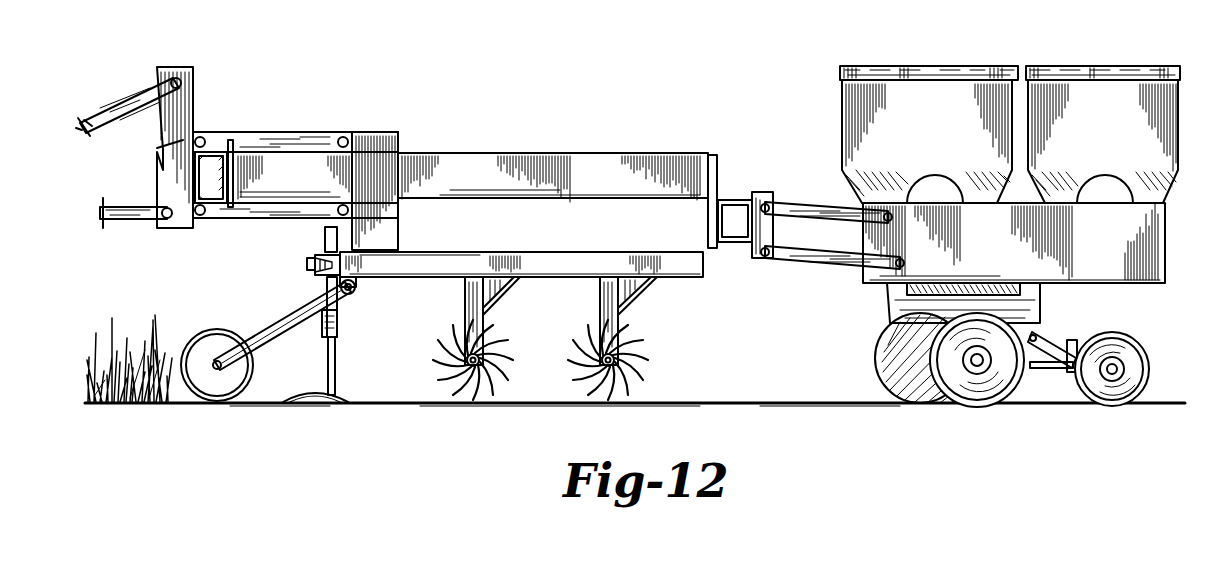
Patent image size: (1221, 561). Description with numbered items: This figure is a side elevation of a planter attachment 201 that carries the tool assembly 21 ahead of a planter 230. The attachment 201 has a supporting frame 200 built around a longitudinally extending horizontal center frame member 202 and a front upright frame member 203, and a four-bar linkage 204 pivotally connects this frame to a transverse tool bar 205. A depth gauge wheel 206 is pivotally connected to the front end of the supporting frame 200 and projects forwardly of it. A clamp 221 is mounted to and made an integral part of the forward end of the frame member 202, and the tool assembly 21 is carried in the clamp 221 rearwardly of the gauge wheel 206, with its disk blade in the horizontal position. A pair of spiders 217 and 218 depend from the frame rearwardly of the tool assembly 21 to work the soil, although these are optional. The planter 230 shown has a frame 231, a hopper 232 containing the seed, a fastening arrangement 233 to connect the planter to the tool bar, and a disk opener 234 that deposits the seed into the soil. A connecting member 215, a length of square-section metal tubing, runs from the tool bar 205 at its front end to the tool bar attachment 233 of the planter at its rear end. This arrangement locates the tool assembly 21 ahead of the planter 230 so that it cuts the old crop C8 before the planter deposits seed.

The supporting frame 200 is at (427, 283).
The attachment 201 is at (320, 117).
The center frame member 202 is at (558, 265).
The front upright frame member 203 is at (385, 160).
The four-bar linkage 204 is at (283, 220).
The tool bar 205 is at (217, 200).
The depth gauge wheel 206 is at (213, 387).
The tool assembly 21 is at (318, 370).
The connecting member 215 is at (548, 165).
The spider 217 is at (455, 368).
The spider 218 is at (630, 338).
The clamp 221 is at (323, 275).
The old crop C8 is at (140, 318).
The planter 230 is at (985, 223).
The frame 231 is at (1115, 265).
The hopper 232 is at (887, 110).
The fastening arrangement 233 is at (730, 237).
The disk opener 234 is at (907, 375).